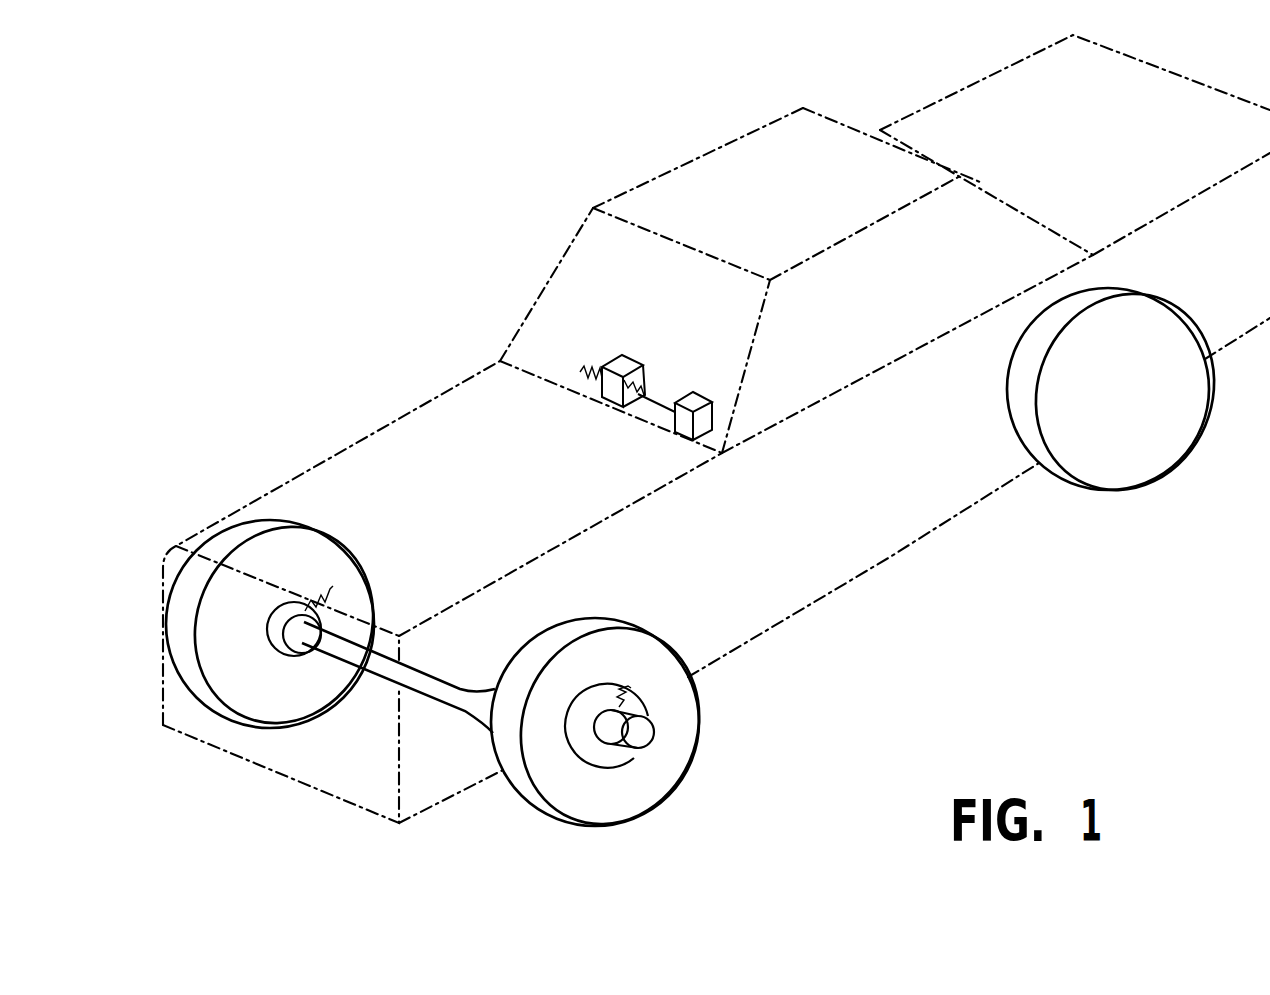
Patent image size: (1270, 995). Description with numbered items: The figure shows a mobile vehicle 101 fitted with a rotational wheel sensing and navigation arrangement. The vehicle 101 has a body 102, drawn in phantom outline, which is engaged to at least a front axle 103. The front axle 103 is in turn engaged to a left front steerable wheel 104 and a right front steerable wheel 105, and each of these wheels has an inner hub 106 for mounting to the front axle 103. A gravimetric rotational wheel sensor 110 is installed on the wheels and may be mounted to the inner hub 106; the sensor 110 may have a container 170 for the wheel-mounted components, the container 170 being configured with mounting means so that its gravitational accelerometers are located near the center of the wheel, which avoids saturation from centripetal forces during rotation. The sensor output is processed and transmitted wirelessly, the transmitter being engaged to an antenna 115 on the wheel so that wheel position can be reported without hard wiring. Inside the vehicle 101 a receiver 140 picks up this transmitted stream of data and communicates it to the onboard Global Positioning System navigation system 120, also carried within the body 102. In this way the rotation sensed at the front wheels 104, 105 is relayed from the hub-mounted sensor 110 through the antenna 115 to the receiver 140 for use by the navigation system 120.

The mobile vehicle 101 is at (1206, 649).
The body 102 is at (907, 470).
The front axle 103 is at (398, 683).
The left front steerable wheel 104 is at (595, 833).
The right front steerable wheel 105 is at (262, 520).
The inner hub 106 is at (657, 738).
The gravimetric rotational wheel sensor 110 is at (262, 607).
The antenna 115 is at (328, 589).
The Global Positioning System navigation system 120 is at (690, 440).
The receiver 140 is at (617, 348).
The container 170 is at (583, 702).